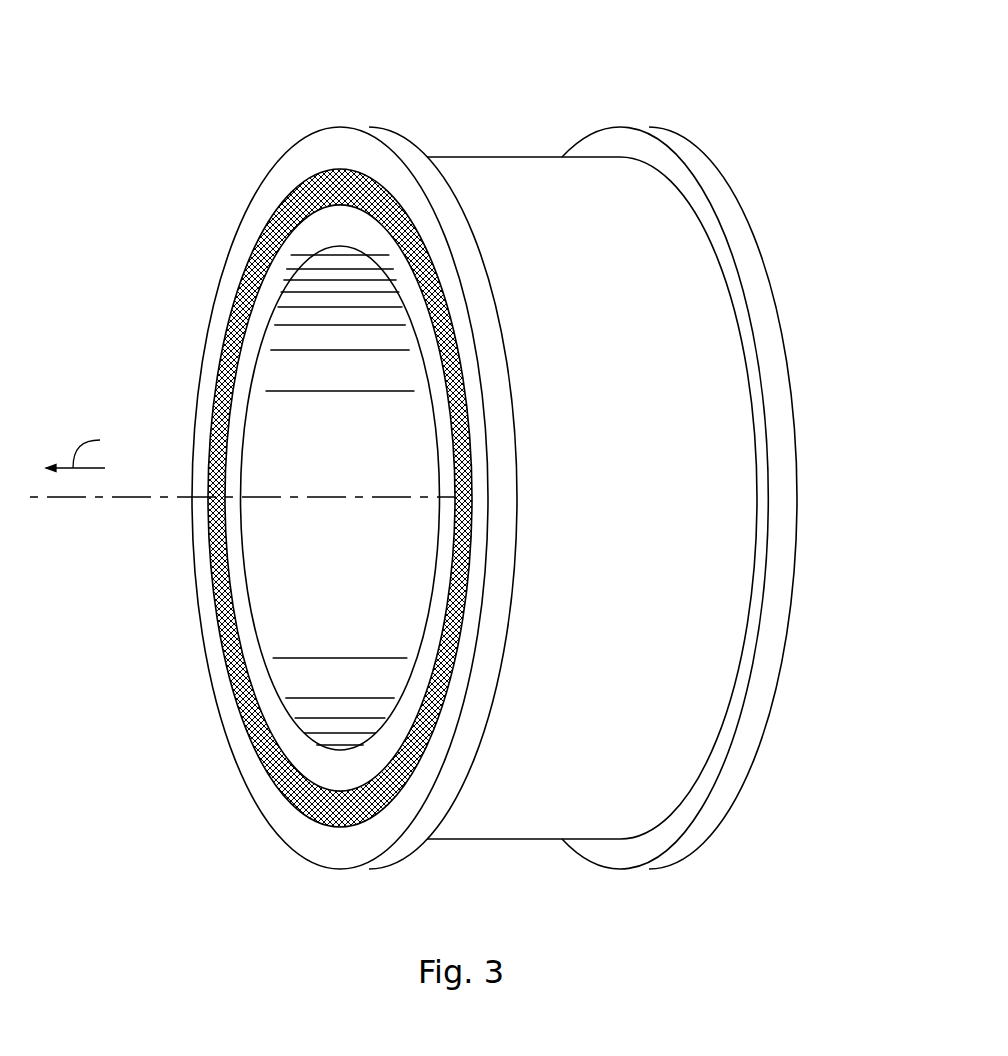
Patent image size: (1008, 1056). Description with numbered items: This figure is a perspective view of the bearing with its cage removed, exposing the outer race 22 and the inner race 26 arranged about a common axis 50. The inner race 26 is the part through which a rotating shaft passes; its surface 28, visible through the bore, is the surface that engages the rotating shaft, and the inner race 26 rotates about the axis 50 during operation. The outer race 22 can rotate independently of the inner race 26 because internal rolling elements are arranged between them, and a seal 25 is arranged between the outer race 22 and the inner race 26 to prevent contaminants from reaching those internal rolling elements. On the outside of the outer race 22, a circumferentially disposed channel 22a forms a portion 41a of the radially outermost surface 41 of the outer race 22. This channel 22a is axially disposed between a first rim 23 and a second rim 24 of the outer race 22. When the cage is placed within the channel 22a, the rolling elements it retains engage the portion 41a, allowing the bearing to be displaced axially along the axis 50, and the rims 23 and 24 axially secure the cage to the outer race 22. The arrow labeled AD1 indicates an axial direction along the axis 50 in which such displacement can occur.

The outer race 22 is at (338, 437).
The circumferentially disposed channel 22a is at (705, 623).
The rim 23 is at (298, 163).
The rim 24 is at (717, 800).
The seal 25 is at (233, 322).
The inner race 26 is at (337, 767).
The surface 28 is at (287, 622).
The radially outermost surface 41 is at (662, 422).
The portion 41a is at (710, 333).
The axis 50 is at (72, 497).
The axial direction AD1 is at (102, 451).